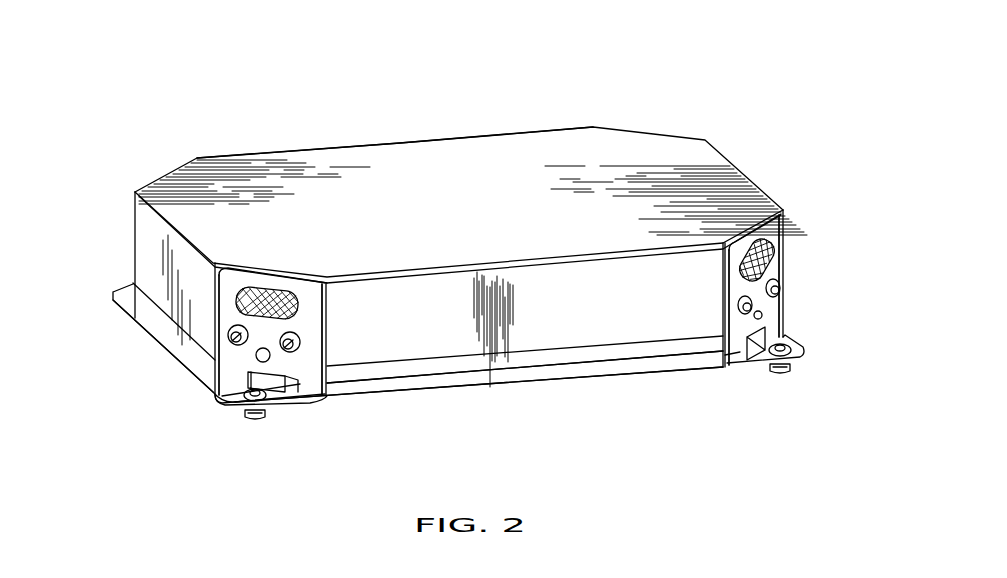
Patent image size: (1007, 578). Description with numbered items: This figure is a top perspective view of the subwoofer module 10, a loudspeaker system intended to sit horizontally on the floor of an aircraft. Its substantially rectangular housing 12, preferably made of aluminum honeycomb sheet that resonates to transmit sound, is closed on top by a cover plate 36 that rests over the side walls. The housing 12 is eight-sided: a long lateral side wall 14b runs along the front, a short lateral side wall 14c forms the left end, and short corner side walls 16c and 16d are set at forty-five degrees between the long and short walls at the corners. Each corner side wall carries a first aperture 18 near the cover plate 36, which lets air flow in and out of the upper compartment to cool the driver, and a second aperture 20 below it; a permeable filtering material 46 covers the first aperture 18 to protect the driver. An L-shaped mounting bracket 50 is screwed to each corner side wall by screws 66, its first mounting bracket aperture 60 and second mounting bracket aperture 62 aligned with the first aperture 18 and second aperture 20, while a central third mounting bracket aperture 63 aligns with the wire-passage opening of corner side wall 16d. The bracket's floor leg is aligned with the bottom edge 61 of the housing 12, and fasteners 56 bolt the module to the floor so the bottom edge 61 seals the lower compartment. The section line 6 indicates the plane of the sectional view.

The subwoofer module 10 is at (250, 128).
The housing 12 is at (640, 133).
The cover plate 36 is at (522, 148).
The short lateral side wall 14c is at (147, 247).
The long lateral side wall 14b is at (575, 330).
The short corner side wall 16c is at (785, 222).
The short corner side wall 16d is at (170, 347).
The first aperture 18 is at (245, 290).
The permeable filtering material 46 is at (289, 292).
The first mounting bracket aperture 60 is at (323, 299).
The screws 66 is at (303, 340).
The third mounting bracket aperture 63 is at (270, 362).
The mounting bracket 50 is at (227, 397).
The fasteners 56 is at (263, 422).
The second aperture 20 is at (280, 383).
The second mounting bracket aperture 62 is at (300, 388).
The bottom edge 61 is at (473, 398).
The section line 6- 6 is at (442, 163).